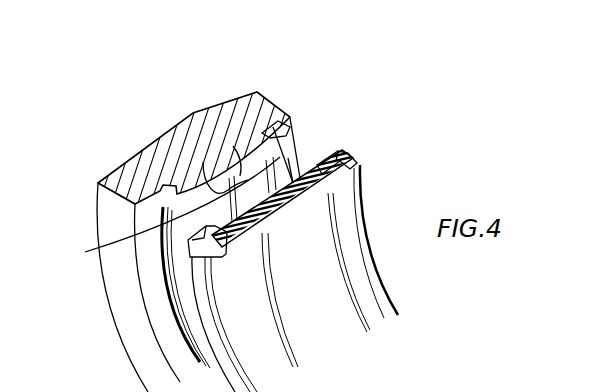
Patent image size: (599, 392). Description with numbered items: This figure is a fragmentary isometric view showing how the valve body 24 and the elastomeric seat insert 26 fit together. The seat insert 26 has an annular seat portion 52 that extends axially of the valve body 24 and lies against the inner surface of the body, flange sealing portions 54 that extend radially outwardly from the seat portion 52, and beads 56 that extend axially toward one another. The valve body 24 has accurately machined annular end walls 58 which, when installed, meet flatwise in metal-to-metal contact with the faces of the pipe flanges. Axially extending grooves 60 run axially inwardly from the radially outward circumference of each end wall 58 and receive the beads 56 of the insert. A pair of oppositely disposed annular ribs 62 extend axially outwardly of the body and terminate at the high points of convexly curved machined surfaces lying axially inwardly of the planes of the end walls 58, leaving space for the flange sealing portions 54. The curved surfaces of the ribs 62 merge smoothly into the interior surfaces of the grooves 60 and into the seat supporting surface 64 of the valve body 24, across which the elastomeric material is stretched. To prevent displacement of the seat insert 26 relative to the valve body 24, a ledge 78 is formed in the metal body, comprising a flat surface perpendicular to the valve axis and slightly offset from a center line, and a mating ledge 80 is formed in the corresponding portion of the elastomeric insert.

The valve body 24 is at (157, 130).
The elastomeric seat insert 26 is at (348, 215).
The annular seat portion 52 is at (309, 251).
The flange sealing portions 54 is at (348, 153).
The beads 56 is at (322, 160).
The annular end walls 58 is at (262, 91).
The axially extending grooves 60 is at (264, 127).
The annular ribs 62 is at (290, 114).
The seat supporting surface 64 is at (216, 166).
The ledge 78 is at (231, 150).
The mating ledge 80 is at (288, 158).